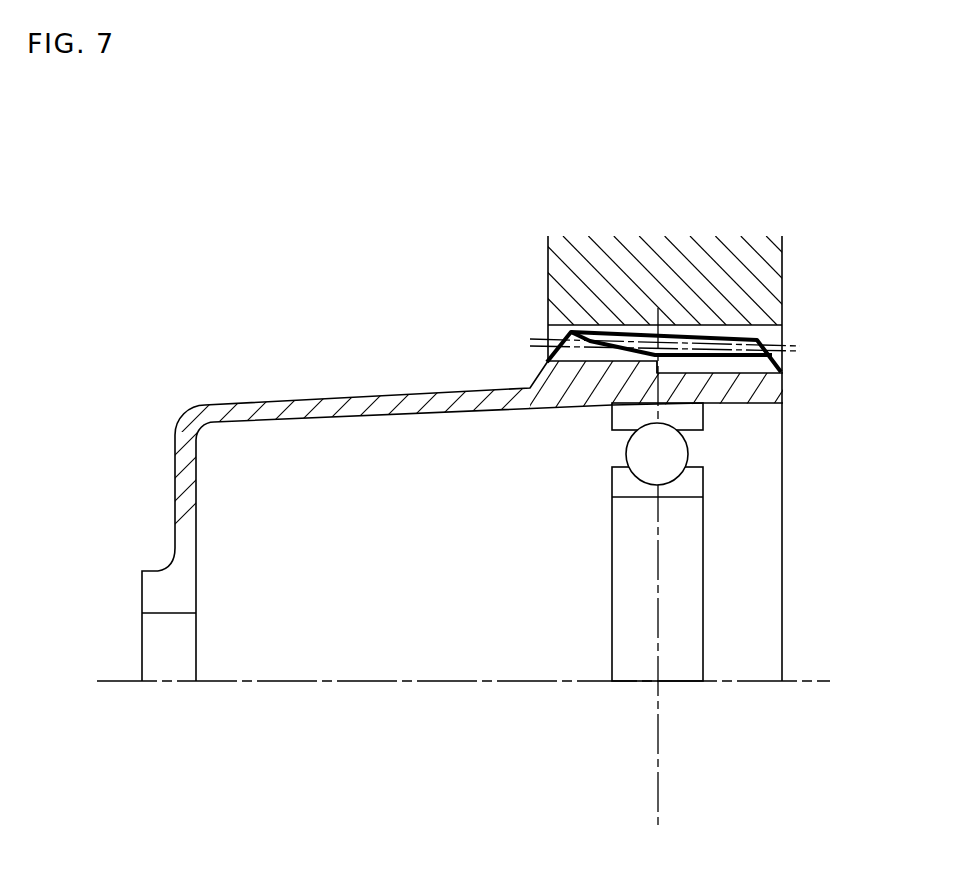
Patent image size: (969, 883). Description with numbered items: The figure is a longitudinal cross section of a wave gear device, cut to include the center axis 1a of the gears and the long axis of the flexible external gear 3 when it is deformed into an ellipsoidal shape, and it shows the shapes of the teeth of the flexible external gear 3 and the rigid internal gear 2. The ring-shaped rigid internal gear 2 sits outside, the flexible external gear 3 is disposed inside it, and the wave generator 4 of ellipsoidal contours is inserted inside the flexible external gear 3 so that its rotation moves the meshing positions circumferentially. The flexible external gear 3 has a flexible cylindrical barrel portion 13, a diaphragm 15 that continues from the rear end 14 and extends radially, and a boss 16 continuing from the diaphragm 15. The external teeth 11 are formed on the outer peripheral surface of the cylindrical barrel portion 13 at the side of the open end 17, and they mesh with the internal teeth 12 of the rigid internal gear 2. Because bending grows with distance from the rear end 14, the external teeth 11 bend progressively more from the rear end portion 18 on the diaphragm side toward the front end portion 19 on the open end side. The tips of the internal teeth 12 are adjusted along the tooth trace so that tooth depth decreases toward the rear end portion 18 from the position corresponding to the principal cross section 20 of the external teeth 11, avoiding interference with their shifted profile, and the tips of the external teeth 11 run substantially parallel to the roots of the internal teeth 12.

The center axis 1a is at (120, 682).
The rigid internal gear 2 is at (538, 272).
The flexible external gear 3 is at (352, 348).
The wave generator 4 is at (718, 588).
The external teeth 11 is at (726, 335).
The internal teeth 12 is at (612, 352).
The cylindrical barrel portion 13 is at (317, 422).
The rear end 14 is at (190, 412).
The diaphragm 15 is at (182, 517).
The boss 16 is at (147, 593).
The open end 17 is at (783, 473).
The rear end portion 18 is at (566, 331).
The front end portion 19 is at (760, 344).
The principal cross section 20 is at (657, 378).